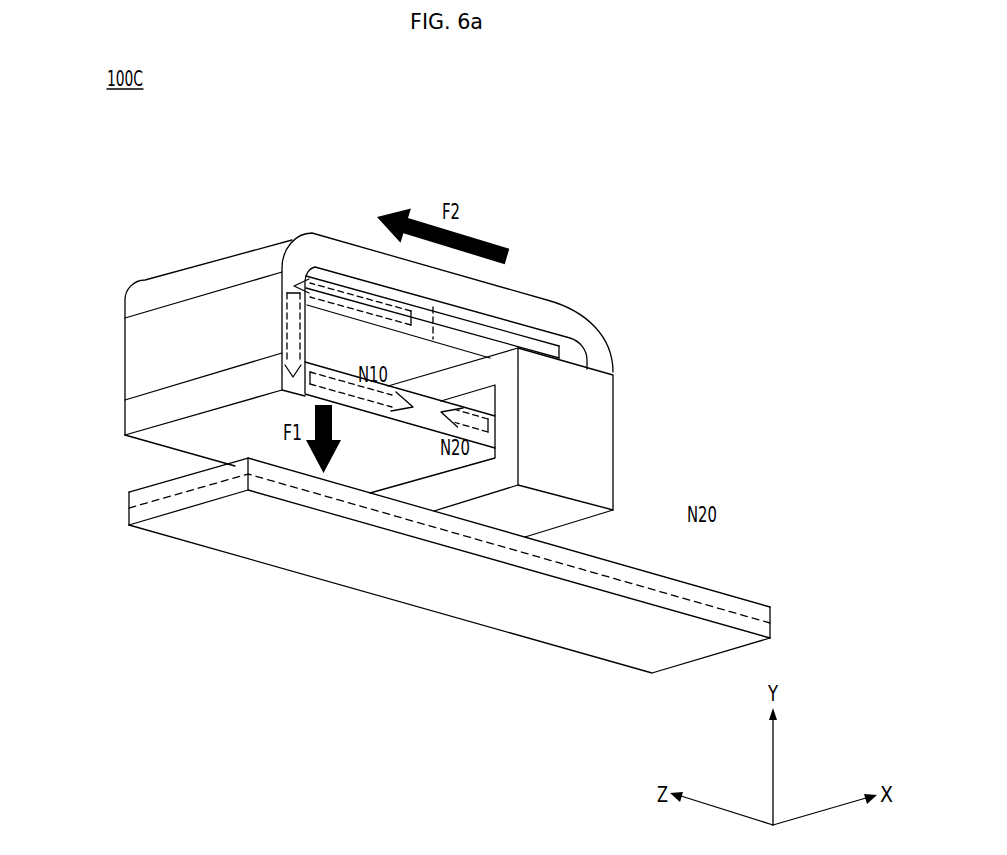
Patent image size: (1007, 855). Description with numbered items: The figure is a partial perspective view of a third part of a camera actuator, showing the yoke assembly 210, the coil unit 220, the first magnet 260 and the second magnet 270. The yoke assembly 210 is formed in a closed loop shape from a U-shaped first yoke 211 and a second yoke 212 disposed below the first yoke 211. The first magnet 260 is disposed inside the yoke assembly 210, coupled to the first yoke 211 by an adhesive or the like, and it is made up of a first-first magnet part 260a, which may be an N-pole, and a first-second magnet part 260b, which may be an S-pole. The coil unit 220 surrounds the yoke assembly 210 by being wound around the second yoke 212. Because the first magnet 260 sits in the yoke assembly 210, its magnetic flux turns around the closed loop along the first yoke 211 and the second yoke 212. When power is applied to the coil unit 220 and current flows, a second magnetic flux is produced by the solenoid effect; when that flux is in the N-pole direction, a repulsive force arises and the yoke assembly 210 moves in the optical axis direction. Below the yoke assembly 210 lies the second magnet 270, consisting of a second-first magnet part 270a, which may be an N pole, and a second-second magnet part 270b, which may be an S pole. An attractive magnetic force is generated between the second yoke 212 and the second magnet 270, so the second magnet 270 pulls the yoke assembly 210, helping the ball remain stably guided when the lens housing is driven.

The yoke assembly 210 is at (65, 348).
The first yoke 211 is at (340, 322).
The second yoke 212 is at (327, 366).
The coil unit 220 is at (595, 423).
The first magnet 260 is at (676, 258).
The first-first magnet part 260a is at (489, 299).
The first-second magnet part 260b is at (489, 323).
The second magnet 270 is at (48, 467).
The second-first magnet part 270a is at (133, 493).
The second-second magnet part 270b is at (133, 515).